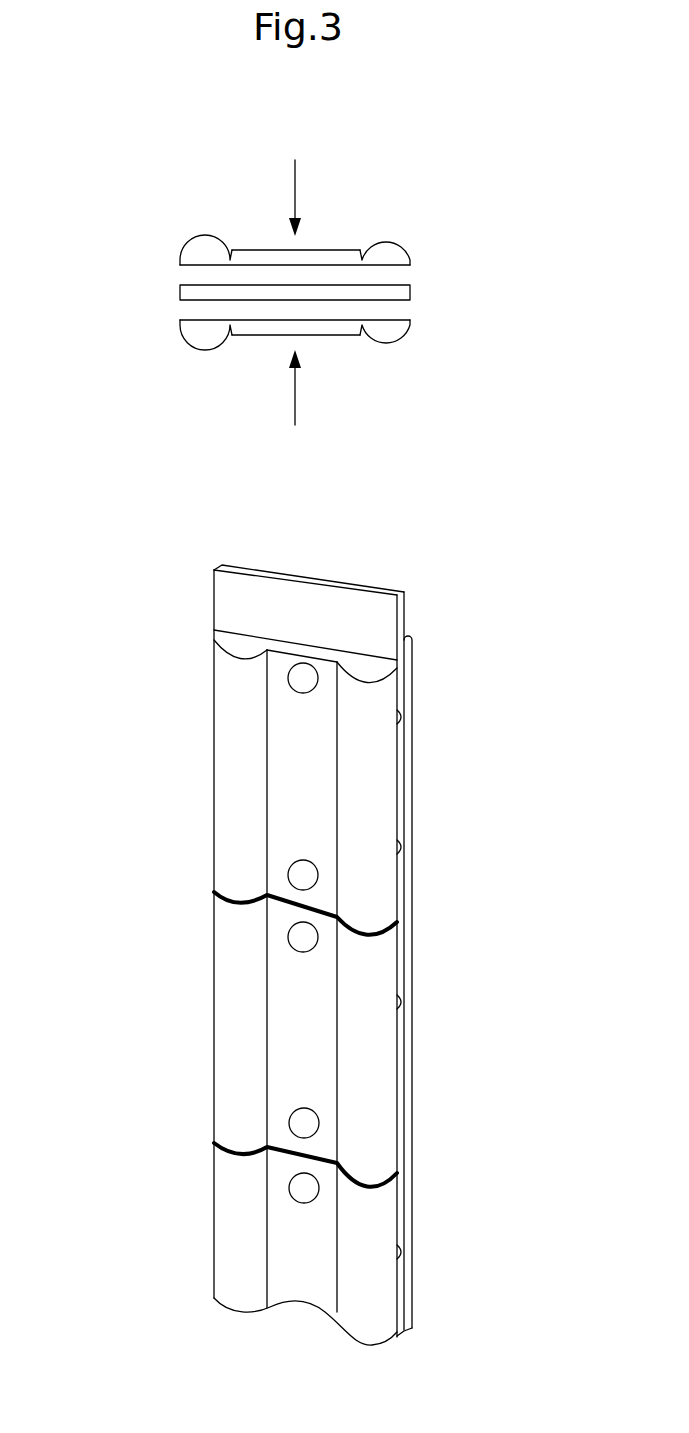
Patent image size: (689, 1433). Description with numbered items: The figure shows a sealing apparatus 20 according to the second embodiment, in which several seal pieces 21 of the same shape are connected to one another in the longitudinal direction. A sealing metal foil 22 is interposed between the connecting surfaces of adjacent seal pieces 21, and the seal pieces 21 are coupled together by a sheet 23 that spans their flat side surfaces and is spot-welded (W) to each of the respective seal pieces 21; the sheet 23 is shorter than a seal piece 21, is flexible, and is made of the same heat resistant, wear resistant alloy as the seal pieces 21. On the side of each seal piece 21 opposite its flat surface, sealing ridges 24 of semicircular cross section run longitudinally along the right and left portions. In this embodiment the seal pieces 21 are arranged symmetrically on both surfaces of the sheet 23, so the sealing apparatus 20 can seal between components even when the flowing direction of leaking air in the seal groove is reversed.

The sealing apparatus 20 is at (302, 749).
The seal piece 21 is at (248, 248).
The sealing metal foil 22 is at (290, 905).
The sheet 23 is at (337, 292).
The sealing ridge 24 is at (392, 236).
The spot weld W is at (322, 694).